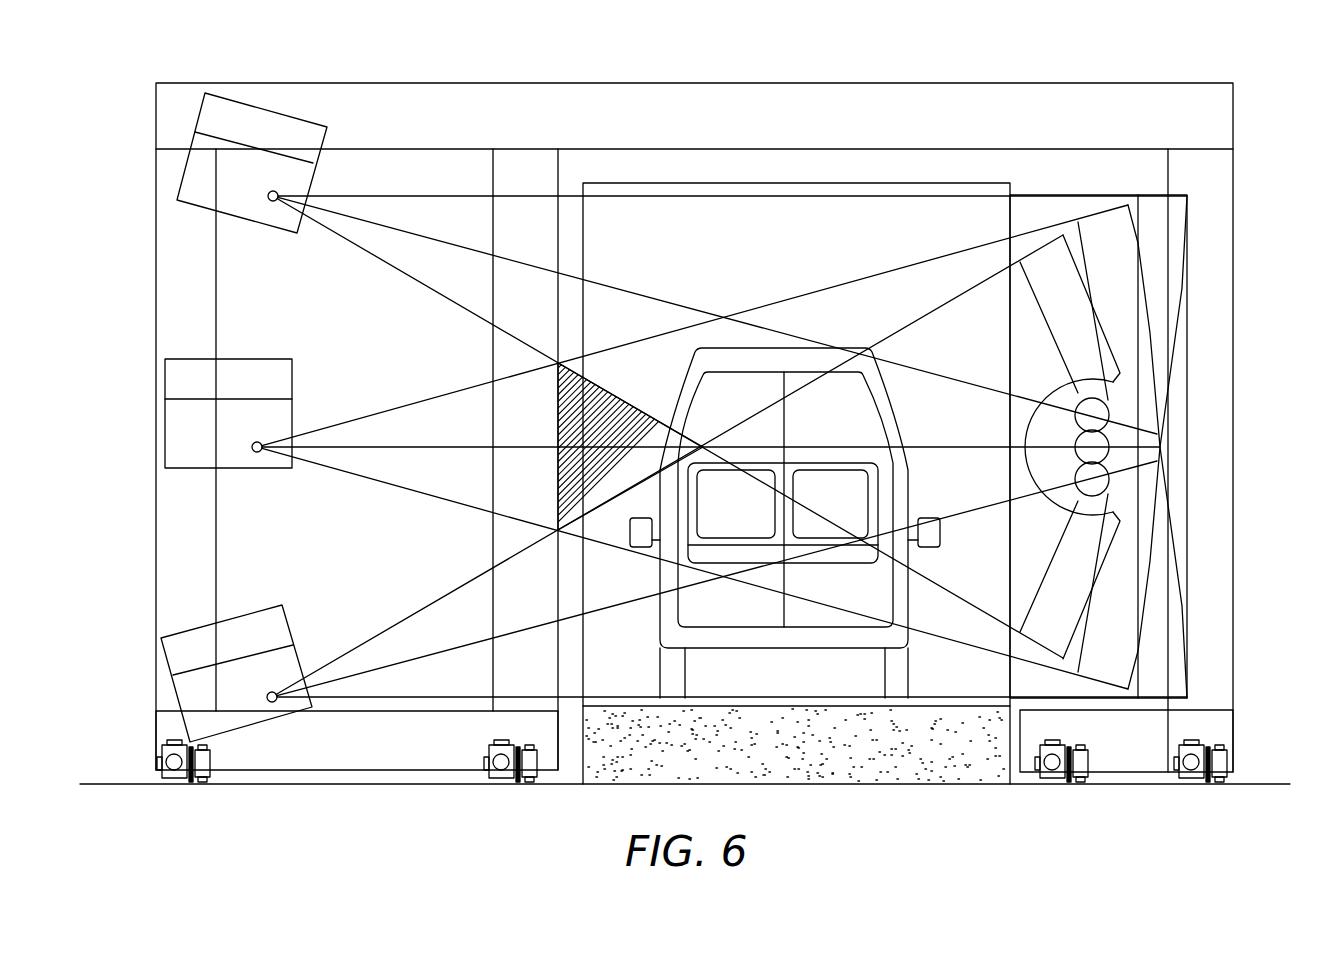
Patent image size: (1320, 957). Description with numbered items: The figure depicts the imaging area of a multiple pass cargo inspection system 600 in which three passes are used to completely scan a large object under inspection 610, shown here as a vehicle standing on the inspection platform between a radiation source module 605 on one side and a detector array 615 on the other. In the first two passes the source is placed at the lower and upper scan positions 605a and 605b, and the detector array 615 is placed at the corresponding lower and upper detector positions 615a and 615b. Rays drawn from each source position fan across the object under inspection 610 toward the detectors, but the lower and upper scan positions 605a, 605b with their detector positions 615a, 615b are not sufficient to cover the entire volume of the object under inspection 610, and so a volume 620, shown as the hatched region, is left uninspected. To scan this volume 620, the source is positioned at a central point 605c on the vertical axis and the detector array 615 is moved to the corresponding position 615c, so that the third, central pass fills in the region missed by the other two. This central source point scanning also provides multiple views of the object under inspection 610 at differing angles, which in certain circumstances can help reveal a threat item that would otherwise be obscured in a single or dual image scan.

The inspection system 600 is at (1303, 105).
The first sensor module 605 is at (212, 723).
The lower scan position 605a is at (173, 649).
The upper scan position 605b is at (195, 183).
The central point 605c is at (175, 446).
The object under inspection 610 is at (928, 675).
The detector array 615 is at (1208, 683).
The lower detector position 615a is at (1180, 665).
The upper detector position 615b is at (1180, 225).
The detector position corresponding to central point 615c is at (1143, 362).
The volume not inspected 620 is at (558, 400).